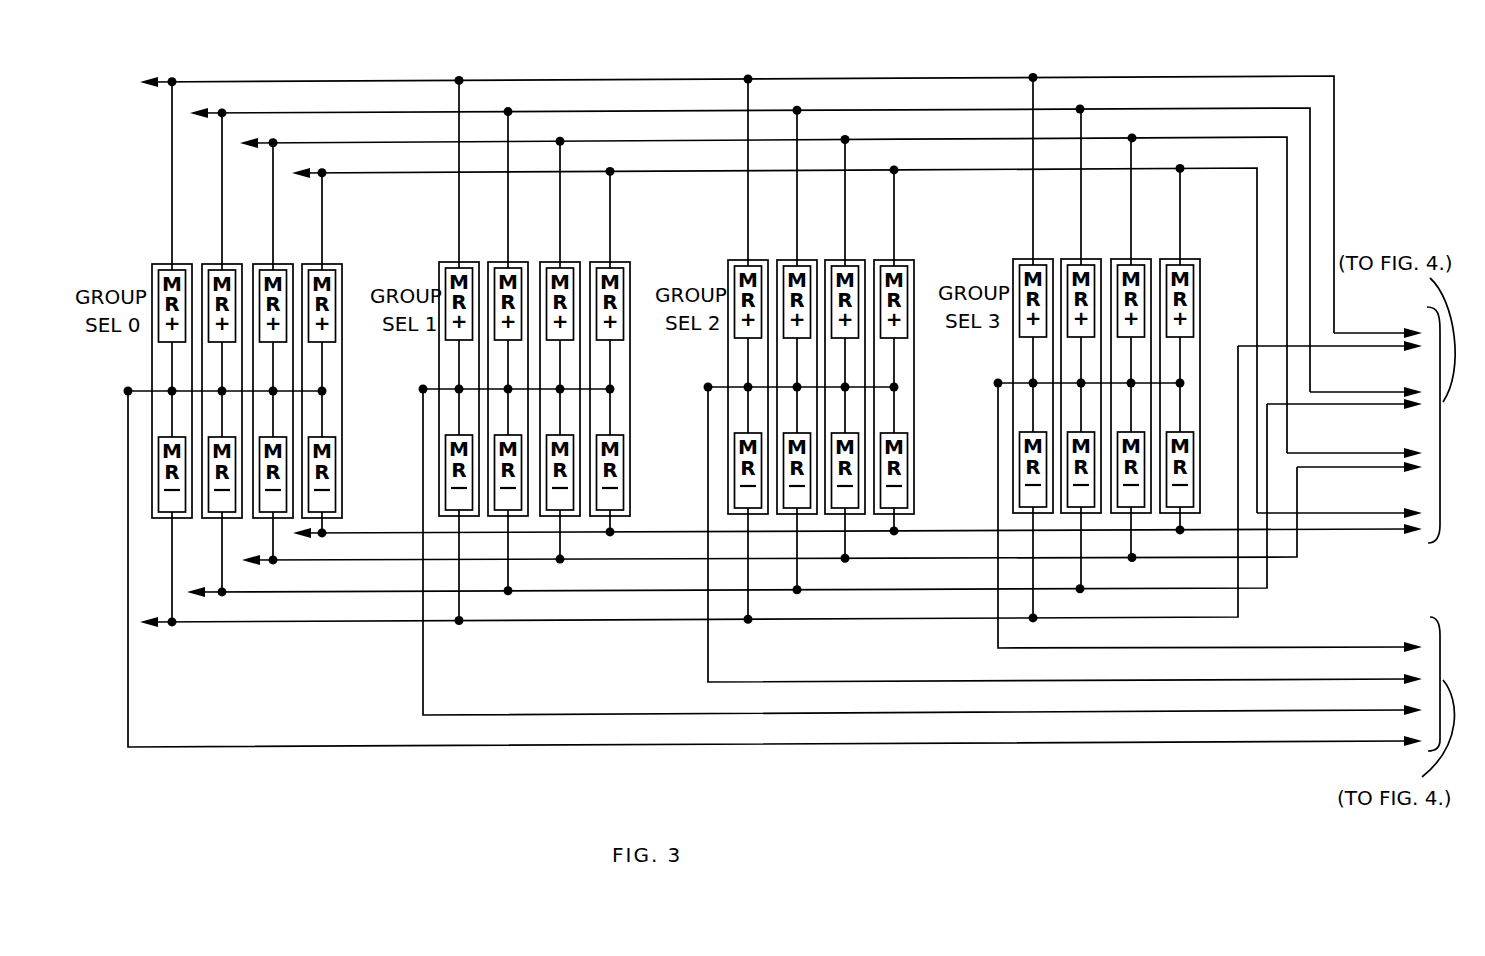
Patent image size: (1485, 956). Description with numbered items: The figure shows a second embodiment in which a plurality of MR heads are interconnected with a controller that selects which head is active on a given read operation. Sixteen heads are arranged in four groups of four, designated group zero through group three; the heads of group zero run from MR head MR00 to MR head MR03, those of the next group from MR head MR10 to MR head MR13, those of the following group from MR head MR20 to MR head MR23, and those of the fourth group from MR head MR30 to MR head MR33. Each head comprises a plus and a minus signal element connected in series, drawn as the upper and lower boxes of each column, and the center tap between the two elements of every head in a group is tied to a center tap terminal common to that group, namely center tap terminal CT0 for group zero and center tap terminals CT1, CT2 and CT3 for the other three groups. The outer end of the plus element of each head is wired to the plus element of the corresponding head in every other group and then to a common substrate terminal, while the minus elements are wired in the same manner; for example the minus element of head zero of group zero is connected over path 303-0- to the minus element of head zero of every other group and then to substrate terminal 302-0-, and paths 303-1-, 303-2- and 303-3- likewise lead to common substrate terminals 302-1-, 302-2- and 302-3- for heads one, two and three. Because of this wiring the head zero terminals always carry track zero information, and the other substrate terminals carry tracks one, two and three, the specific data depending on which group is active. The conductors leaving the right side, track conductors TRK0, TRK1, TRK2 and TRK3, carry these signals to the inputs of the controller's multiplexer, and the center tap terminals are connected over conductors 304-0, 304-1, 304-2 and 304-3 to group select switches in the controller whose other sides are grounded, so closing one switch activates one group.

The path 303-0- is at (664, 620).
The path 303-1- is at (658, 590).
The path 303-2- is at (662, 559).
The path 303-3- is at (653, 533).
The substrate terminal 302-0- is at (1033, 619).
The common substrate terminal 302-1- is at (1080, 590).
The common substrate terminal 302-2- is at (1132, 558).
The common substrate terminal 302-3- is at (1180, 530).
The conductor 304-0 is at (1348, 741).
The conductor 304-1 is at (1345, 710).
The conductor 304-2 is at (1355, 679).
The conductor 304-3 is at (1373, 647).
The track 0 conductor TRK0 is at (1330, 328).
The track 1 conductor TRK1 is at (1344, 387).
The track 2 conductor TRK2 is at (1354, 450).
The track 3 conductor TRK3 is at (1339, 511).
The center tap terminal CT0 is at (128, 391).
The center tap terminal CT1 is at (423, 389).
The center tap terminal CT2 is at (708, 387).
The center tap terminal CT3 is at (998, 383).
The MR head MR00 is at (166, 264).
The MR head MR03 is at (330, 264).
The MR head MR10 is at (458, 262).
The MR head MR13 is at (618, 262).
The MR head MR20 is at (747, 260).
The MR head MR23 is at (903, 260).
The MR head MR30 is at (1032, 259).
The MR head MR33 is at (1184, 259).